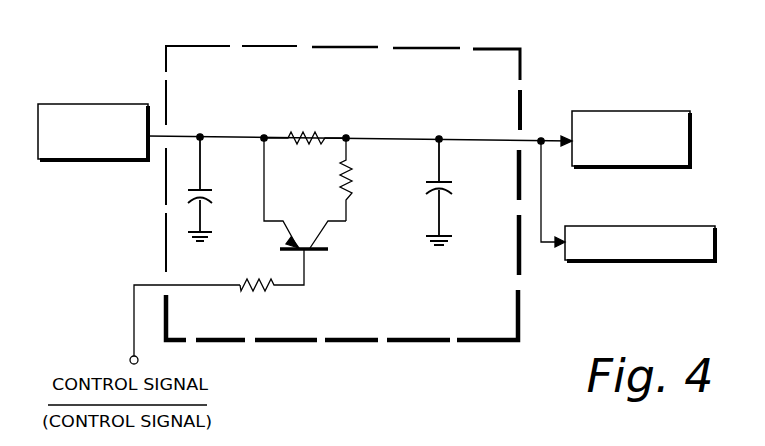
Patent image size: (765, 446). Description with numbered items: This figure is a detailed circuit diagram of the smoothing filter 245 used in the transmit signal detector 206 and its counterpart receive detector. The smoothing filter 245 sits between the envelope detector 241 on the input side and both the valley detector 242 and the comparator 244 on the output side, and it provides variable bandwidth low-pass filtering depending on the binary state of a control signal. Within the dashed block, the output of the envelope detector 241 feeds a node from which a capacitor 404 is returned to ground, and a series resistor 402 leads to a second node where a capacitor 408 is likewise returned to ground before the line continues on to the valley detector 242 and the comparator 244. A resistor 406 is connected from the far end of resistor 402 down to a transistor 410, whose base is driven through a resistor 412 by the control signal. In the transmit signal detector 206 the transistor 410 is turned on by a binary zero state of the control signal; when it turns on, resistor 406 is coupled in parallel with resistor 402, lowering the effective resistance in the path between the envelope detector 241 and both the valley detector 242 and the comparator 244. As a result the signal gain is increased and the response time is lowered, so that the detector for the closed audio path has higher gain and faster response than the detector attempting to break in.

The transmit signal detector 206 is at (452, 411).
The envelope detector 241 is at (112, 104).
The valley detector 242 is at (660, 111).
The comparator 244 is at (698, 226).
The smoothing filter 245 is at (335, 46).
The resistor 402 is at (303, 134).
The capacitor 404 is at (211, 190).
The resistor 406 is at (352, 178).
The capacitor 408 is at (453, 188).
The transistor 410 is at (304, 230).
The resistor 412 is at (258, 292).